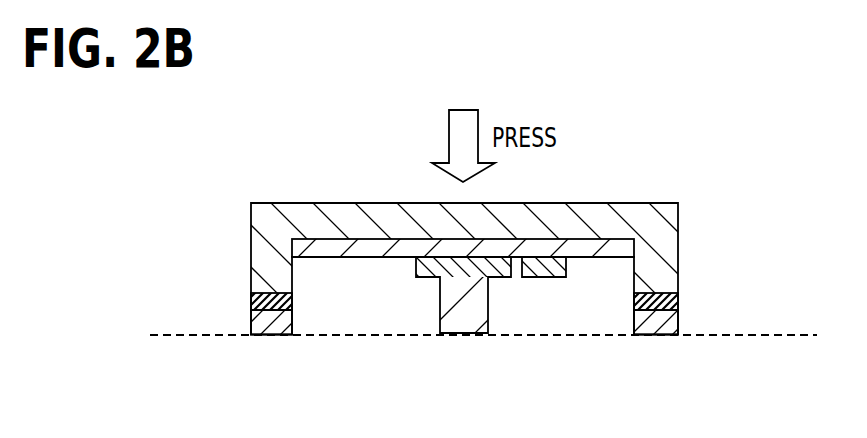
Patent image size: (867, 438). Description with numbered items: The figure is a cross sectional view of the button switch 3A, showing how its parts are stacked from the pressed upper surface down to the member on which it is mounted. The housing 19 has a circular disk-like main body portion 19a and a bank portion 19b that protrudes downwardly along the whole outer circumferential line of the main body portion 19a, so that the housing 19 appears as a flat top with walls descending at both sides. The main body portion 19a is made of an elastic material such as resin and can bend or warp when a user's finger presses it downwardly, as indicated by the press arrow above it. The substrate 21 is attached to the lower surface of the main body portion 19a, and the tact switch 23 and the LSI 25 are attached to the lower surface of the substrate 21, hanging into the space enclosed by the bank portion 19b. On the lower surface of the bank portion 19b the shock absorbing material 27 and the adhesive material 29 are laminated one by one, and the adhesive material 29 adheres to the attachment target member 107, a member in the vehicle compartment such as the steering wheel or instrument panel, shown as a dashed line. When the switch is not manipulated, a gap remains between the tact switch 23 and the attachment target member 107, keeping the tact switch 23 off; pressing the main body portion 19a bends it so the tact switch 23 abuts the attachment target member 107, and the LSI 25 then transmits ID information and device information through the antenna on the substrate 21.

The button switch 3A is at (181, 181).
The housing 19 is at (444, 240).
The main body portion 19a is at (343, 214).
The bank portion 19b is at (261, 230).
The substrate 21 is at (350, 258).
The tact switch 23 is at (457, 334).
The LSI 25 is at (550, 278).
The shock absorbing material 27 is at (254, 297).
The adhesive material 29 is at (262, 321).
The attachment target member 107 is at (782, 352).